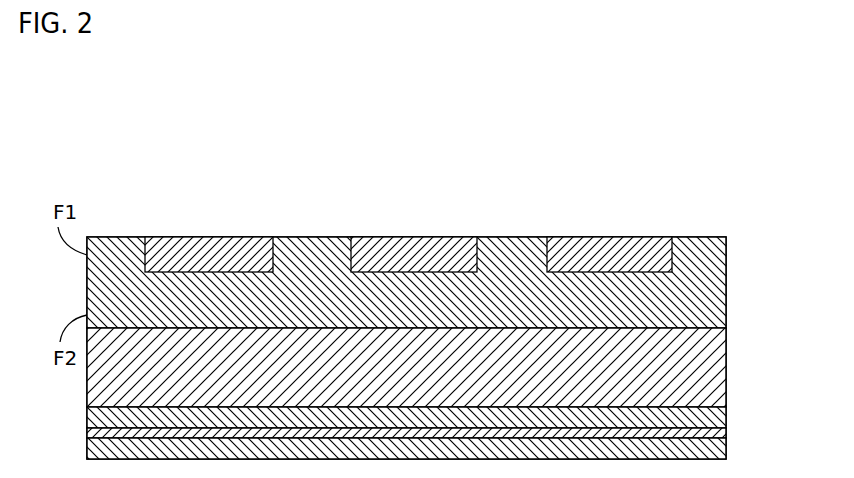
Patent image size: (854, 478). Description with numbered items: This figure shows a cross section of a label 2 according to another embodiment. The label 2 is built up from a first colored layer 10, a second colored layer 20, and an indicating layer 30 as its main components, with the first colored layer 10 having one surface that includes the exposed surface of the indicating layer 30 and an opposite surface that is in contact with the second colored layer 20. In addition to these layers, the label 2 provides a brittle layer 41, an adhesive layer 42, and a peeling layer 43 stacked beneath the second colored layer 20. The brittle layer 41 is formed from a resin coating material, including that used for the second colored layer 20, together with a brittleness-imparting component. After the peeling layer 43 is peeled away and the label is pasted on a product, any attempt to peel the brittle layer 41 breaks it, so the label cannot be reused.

The label 2 is at (733, 170).
The first colored layer 10 is at (727, 290).
The second colored layer 20 is at (727, 378).
The indicating layer 30 is at (207, 237).
The brittle layer 41 is at (727, 420).
The adhesive layer 42 is at (727, 433).
The peeling layer 43 is at (727, 448).